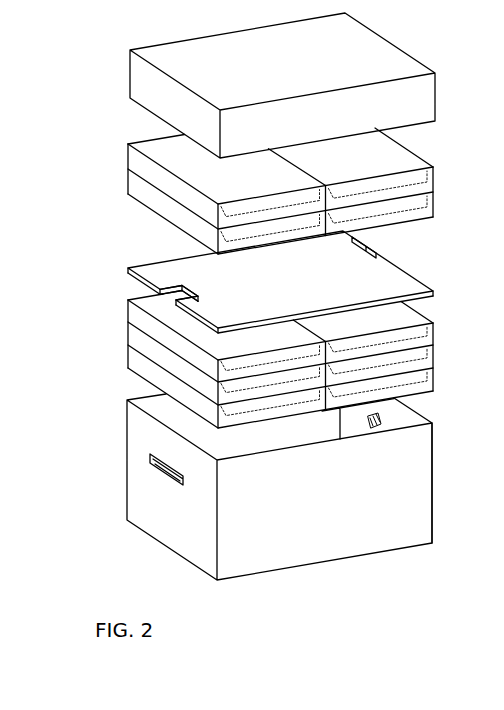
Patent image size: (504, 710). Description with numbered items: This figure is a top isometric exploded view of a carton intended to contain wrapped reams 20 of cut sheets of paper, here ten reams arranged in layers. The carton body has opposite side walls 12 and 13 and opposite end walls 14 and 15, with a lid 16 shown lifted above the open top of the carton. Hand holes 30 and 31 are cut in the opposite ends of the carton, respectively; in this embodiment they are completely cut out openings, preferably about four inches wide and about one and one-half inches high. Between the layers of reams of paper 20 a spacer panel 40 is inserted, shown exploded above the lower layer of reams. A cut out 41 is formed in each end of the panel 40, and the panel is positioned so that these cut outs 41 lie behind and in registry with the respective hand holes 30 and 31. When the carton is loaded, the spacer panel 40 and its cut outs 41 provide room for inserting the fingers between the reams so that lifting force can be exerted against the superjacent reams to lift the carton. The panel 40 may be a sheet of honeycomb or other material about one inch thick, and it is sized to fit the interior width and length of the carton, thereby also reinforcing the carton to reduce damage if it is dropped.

The lid 16 is at (390, 43).
The wrapped reams 20 is at (128, 185).
The spacer panel 40 is at (170, 257).
The cut out 41 is at (135, 302).
The side wall 12 is at (158, 393).
The end wall 14 is at (170, 516).
The side wall 13 is at (407, 455).
The hand hole 31 is at (400, 397).
The end wall 15 is at (383, 416).
The hand hole 30 is at (162, 478).